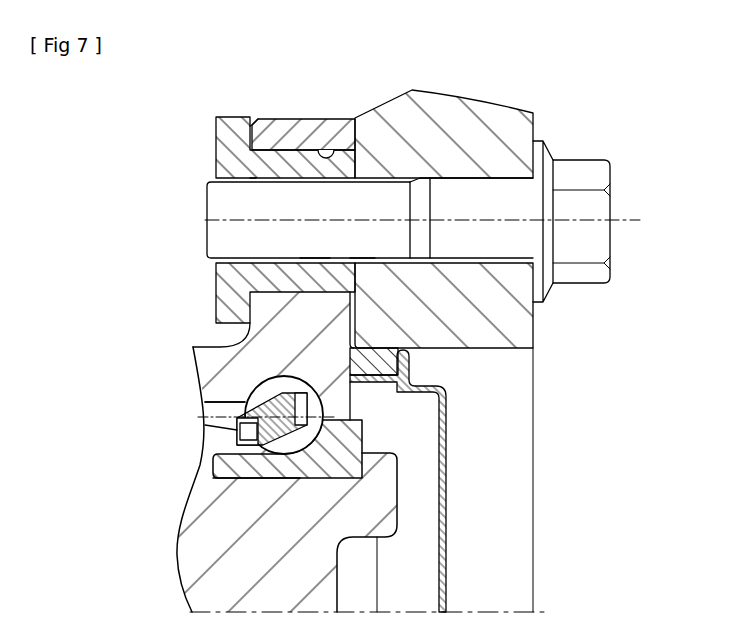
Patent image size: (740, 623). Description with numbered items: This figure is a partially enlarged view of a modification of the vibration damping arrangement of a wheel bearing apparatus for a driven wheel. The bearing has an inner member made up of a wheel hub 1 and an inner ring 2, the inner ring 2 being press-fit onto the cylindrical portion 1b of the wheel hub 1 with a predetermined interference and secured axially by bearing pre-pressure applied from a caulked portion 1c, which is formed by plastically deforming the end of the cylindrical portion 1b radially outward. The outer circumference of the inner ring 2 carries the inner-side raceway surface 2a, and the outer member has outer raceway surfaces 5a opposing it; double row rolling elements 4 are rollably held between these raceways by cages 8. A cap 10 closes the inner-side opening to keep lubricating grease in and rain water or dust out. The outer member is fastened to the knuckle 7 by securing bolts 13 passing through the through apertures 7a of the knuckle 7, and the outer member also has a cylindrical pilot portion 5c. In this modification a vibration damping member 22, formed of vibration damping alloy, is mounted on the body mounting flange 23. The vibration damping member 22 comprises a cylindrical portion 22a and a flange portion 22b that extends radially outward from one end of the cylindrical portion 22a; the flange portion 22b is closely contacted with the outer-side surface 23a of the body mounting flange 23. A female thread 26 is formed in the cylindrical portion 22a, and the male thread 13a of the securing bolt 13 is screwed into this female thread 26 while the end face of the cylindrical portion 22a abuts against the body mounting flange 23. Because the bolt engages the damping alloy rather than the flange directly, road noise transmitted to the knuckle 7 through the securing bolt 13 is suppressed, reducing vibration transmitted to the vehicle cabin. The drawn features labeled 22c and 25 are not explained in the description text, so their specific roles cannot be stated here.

The wheel hub 1 is at (178, 579).
The cylindrical portion 1b is at (253, 467).
The caulked portion 1c is at (383, 463).
The inner ring 2 is at (222, 463).
The inner raceway surface 2a is at (297, 478).
The rolling elements 4 is at (283, 382).
The outer raceway surface 5a is at (253, 393).
The cylindrical pilot portion 5c is at (378, 347).
The knuckle 7 is at (544, 131).
The through aperture 7a is at (509, 258).
The cage 8 is at (237, 437).
The cap 10 is at (459, 568).
The securing bolt 13 is at (600, 202).
The male thread 13a is at (223, 237).
The vibration damping member 22 is at (207, 162).
The cylindrical portion 22a is at (317, 258).
The flange portion 22b is at (215, 308).
The end face of collar 22c is at (362, 258).
The body mounting flange 23 is at (285, 132).
The outer-side surface 23a is at (248, 142).
The elastic member 25 is at (325, 158).
The female thread 26 is at (252, 183).